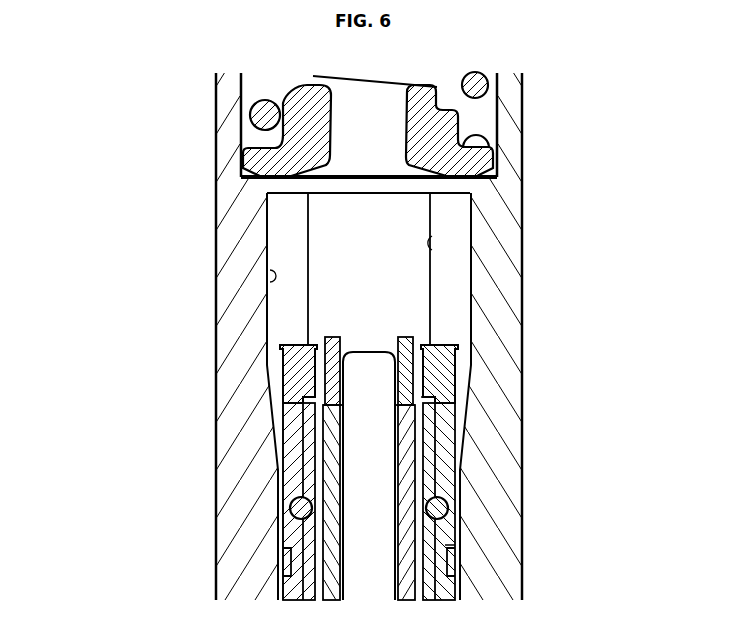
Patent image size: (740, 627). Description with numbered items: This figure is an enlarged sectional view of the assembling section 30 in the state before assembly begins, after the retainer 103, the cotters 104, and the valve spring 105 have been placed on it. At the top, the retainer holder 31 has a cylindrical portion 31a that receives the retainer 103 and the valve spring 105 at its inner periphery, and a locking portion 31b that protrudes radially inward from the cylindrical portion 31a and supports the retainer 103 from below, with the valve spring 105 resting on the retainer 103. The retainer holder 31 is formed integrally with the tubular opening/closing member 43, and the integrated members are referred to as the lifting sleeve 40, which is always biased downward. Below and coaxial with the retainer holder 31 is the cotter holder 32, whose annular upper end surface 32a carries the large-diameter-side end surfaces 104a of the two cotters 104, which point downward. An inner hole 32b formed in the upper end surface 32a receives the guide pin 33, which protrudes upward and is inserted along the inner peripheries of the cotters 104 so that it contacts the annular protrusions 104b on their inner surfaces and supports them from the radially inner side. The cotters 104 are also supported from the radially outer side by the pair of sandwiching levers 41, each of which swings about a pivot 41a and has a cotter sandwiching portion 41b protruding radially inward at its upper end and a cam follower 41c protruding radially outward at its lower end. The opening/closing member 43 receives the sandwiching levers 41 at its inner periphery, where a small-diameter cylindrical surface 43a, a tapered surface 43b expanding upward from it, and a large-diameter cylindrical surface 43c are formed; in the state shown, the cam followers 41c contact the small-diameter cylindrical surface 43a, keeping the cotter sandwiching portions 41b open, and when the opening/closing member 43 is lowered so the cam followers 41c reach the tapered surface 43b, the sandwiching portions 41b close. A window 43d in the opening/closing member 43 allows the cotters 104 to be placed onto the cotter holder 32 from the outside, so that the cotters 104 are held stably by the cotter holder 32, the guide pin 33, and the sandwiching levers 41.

The assembling section 30 is at (126, 158).
The retainer holder 31 is at (212, 99).
The cylindrical portion 31a is at (240, 136).
The locking portion 31b is at (278, 186).
The lifting sleeve 40 is at (526, 228).
The opening/closing member 43 is at (274, 470).
The small-diameter cylindrical surface 43a is at (282, 592).
The tapered surface 43b is at (272, 372).
The large-diameter cylindrical surface 43c is at (268, 275).
The window 43d is at (440, 243).
The cotters 104 is at (326, 344).
The large-diameter-side end surfaces 104a is at (326, 410).
The annular protrusions 104b is at (370, 350).
The sandwiching levers 41 is at (294, 364).
The pivot 41a is at (294, 511).
The cotter sandwiching portion 41b is at (300, 397).
The cam follower 41c is at (286, 562).
The cotter holder 32 is at (402, 482).
The upper end surface 32a is at (424, 378).
The inner hole 32b is at (452, 546).
The guide pin 33 is at (372, 462).
The retainer 103 is at (445, 120).
The valve spring 105 is at (488, 92).